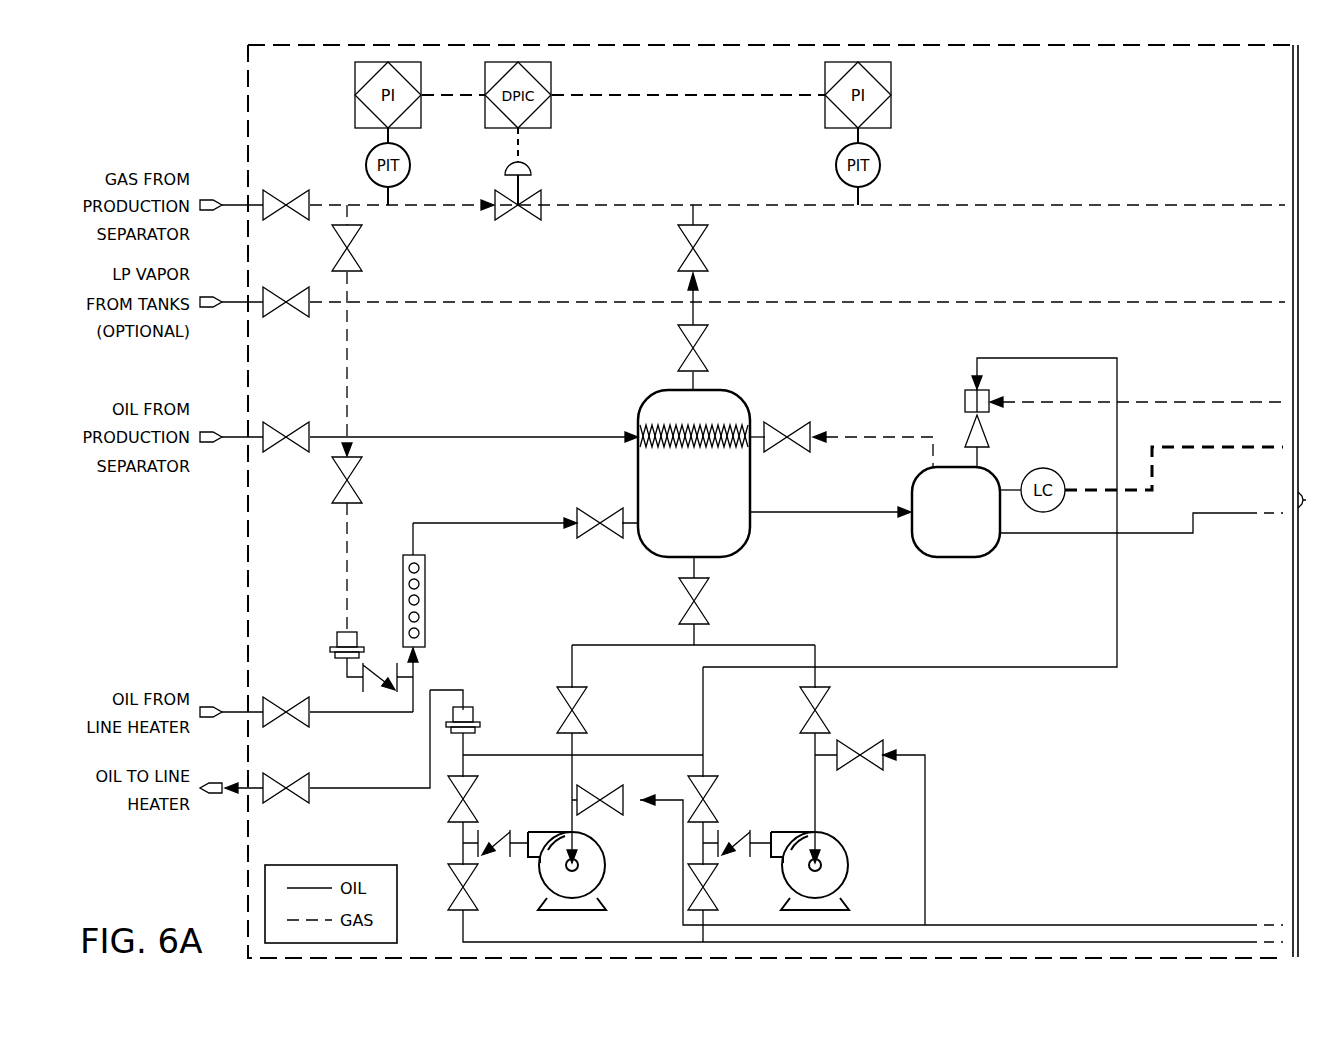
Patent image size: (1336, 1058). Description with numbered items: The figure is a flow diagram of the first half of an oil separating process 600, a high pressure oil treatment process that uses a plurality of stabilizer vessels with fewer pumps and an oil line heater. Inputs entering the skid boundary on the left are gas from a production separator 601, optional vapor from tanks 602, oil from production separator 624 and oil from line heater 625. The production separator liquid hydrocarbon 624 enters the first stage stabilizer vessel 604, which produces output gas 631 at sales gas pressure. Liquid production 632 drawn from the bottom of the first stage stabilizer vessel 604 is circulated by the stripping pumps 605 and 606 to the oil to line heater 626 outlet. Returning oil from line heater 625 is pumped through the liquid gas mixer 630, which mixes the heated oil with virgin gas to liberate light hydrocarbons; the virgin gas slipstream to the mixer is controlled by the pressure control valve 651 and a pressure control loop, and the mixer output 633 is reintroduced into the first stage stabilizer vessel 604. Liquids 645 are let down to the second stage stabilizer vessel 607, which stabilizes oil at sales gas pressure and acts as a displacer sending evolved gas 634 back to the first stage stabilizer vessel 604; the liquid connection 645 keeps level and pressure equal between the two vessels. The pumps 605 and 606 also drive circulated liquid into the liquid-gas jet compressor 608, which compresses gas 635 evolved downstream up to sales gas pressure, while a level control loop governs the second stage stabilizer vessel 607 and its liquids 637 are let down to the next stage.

The oil separating process 600 is at (184, 104).
The gas from a production separator 601 is at (218, 202).
The vapor from tanks 602 is at (218, 306).
The oil from production separator 624 is at (218, 442).
The oil from line heater 625 is at (218, 708).
The oil to line heater 626 is at (218, 794).
The pressure control valve 651 is at (510, 223).
The output gas 631 is at (690, 293).
The output of the liquid gas mixer 633 is at (493, 526).
The liquid gas mixer 630 is at (426, 597).
The first stage stabilizer vessel 604 is at (672, 558).
The liquid production 632 is at (703, 578).
The liquids let down to second stage / liquid connection 645 is at (830, 514).
The evolved gas 634 is at (880, 440).
The liquid-gas jet compressor 608 is at (963, 395).
The gas evolved from third stage stabilizer vessel 635 is at (1172, 400).
The second stage stabilizer vessel 607 is at (956, 558).
The liquids let down to third stage 637 is at (1053, 535).
The stripping pump / booster pump 605 is at (606, 872).
The stripping pump / booster pump 606 is at (849, 872).